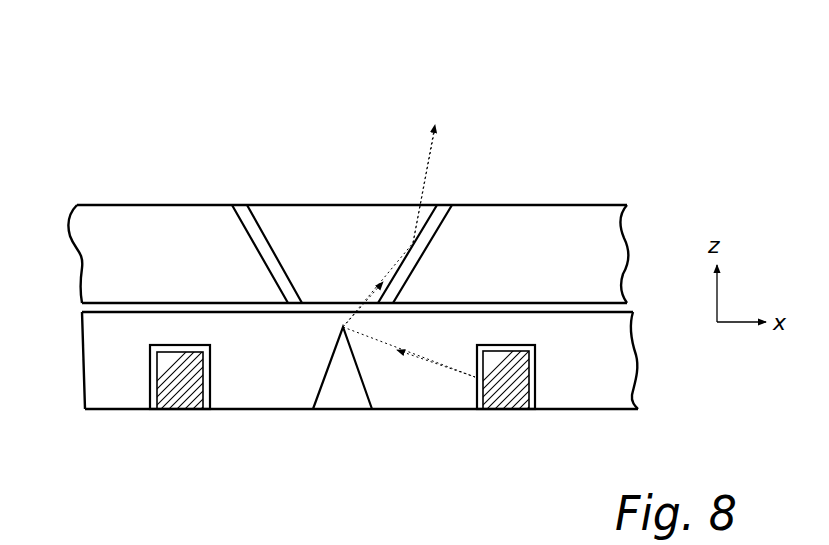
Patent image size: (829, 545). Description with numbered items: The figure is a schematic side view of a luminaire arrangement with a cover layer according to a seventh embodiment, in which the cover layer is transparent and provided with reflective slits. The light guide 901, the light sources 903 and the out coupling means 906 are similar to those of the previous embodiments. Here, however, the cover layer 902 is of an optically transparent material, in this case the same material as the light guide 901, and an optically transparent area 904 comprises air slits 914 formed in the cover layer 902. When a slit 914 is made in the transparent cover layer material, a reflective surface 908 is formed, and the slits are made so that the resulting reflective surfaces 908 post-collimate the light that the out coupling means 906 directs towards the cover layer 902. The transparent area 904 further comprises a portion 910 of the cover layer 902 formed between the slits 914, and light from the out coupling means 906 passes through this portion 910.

The light guide 901 is at (112, 395).
The cover layer 902 is at (132, 230).
The light sources 903 is at (180, 398).
The optically transparent area 904 is at (299, 155).
The out coupling means 906 is at (335, 416).
The reflective surface 908 is at (406, 230).
The portion of the cover layer 910 is at (323, 232).
The air slits 914 is at (296, 301).